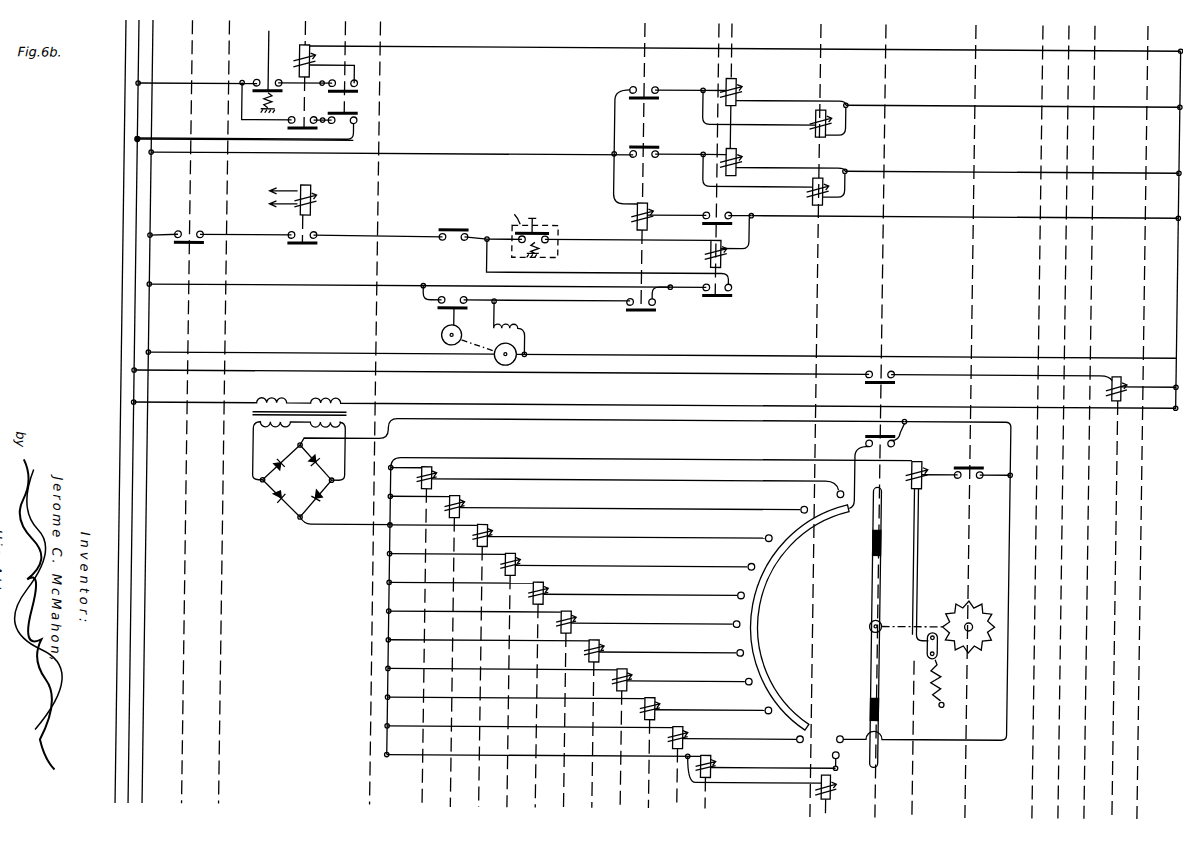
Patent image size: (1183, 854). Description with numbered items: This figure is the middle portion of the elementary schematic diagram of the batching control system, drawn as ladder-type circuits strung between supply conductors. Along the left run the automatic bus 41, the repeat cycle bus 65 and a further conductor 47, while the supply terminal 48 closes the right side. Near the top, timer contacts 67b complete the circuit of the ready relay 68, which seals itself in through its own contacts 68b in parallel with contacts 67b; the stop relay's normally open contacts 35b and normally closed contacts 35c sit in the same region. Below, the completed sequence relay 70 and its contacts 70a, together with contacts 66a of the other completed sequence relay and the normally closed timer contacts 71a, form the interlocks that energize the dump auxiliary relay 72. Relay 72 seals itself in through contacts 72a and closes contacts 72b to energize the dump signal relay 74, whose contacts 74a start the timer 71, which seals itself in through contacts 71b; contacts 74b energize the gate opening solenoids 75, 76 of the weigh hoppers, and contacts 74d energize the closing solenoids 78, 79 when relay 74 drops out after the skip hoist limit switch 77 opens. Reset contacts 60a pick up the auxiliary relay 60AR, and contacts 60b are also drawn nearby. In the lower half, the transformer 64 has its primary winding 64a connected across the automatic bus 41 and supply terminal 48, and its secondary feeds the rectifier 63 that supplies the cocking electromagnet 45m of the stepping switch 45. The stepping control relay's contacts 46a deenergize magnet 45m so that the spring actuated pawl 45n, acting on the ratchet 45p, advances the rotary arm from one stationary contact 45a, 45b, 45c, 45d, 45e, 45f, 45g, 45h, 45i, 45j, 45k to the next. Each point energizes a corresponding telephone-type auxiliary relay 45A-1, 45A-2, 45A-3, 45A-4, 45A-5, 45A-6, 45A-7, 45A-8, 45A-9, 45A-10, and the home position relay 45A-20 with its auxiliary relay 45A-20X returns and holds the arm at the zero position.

The normally open contacts of the stop relay 35b is at (360, 90).
The normally closed contacts of the stop relay 35c is at (360, 127).
The automatic bus 41 is at (153, 120).
The stepping switch 45 is at (913, 605).
The stepping switch auxiliary relay 45A-1 is at (438, 467).
The stepping switch auxiliary relay 45A-2 is at (466, 496).
The stepping switch auxiliary relay 45A-3 is at (494, 525).
The stepping switch auxiliary relay 45A-4 is at (523, 553).
The stepping switch auxiliary relay 45A-5 is at (551, 582).
The stepping switch auxiliary relay 45A-6 is at (579, 611).
The stepping switch auxiliary relay 45A-7 is at (608, 639).
The stepping switch auxiliary relay 45A-8 is at (636, 668).
The stepping switch auxiliary relay 45A-9 is at (664, 697).
The stepping switch auxiliary relay 45A-10 is at (692, 726).
The home position relay 45A-20 is at (721, 755).
The auxiliary relay of the home position relay 45A-20X is at (832, 794).
The stationary contact 45a is at (843, 492).
The stationary contact 45b is at (809, 509).
The stationary contact 45c is at (775, 538).
The stationary contact 45d is at (758, 567).
The stationary contact 45e is at (748, 596).
The stationary contact 45f is at (745, 625).
The stationary contact 45g is at (749, 654).
The stationary contact 45h is at (757, 683).
The stationary contact 45i is at (778, 711).
The stationary contact 45j is at (810, 739).
The stationary contact 45k is at (849, 754).
The cocking electromagnet 45m is at (925, 458).
The spring actuated pawl 45n is at (948, 655).
The ratchet 45p is at (980, 599).
The contacts of the stepping control relay 46a is at (972, 474).
The supply conductor 47 is at (139, 172).
The supply terminal 48 is at (1181, 146).
The contacts of the reset relay 60a is at (868, 378).
The contact 60b is at (871, 435).
The auxiliary relay of the reset relay 60AR is at (1121, 372).
The rectifier 63 is at (582, 473).
The transformer 64 is at (654, 430).
The primary winding 64a is at (322, 398).
The repeat cycle bus 65 is at (126, 117).
The contacts of the completed sequence relay 66a is at (185, 231).
The timer contacts 67b is at (261, 77).
The ready relay 68 is at (301, 46).
The contacts of the ready relay 68b is at (290, 127).
The completed sequence relay 70 is at (313, 208).
The contacts of the completed sequence relay 70a is at (321, 244).
The timer 71 is at (500, 356).
The normally closed contacts of the timer 71a is at (448, 242).
The timer contacts 71b is at (442, 306).
The dump auxiliary relay 72 is at (714, 260).
The contacts of the dump auxiliary relay 72a is at (737, 284).
The contacts of the dump auxiliary relay 72b is at (720, 211).
The dump signal relay 74 is at (650, 223).
The contacts of the dump signal relay 74a is at (658, 310).
The contacts of the dump signal relay 74b is at (646, 84).
The contacts of the dump signal relay 74d is at (655, 155).
The operating solenoid 75 is at (738, 82).
The operating solenoid 76 is at (817, 110).
The limit switch 77 is at (555, 244).
The closing solenoid 78 is at (739, 150).
The closing solenoid 79 is at (815, 195).